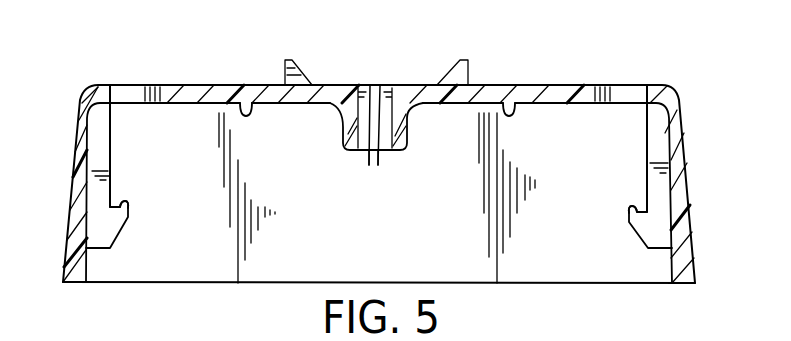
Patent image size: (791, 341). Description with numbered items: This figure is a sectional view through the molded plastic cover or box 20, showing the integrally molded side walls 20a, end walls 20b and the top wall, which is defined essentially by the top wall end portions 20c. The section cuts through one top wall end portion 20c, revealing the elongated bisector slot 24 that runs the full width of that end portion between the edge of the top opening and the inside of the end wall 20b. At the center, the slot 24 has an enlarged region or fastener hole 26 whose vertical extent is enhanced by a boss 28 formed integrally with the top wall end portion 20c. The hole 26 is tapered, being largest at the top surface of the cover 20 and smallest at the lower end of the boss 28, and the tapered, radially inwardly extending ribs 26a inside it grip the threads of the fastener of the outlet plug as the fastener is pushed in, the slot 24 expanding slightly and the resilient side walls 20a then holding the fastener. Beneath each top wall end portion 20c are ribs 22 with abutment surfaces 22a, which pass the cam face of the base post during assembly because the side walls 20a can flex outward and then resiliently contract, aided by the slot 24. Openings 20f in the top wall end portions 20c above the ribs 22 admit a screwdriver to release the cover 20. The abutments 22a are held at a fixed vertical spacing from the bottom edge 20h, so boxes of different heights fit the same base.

The cover 20 is at (576, 67).
The side walls 20a is at (74, 152).
The end walls 20b is at (227, 247).
The top wall end portions 20c is at (247, 84).
The openings 20f is at (113, 98).
The bottom edge 20h is at (553, 285).
The ribs 22 is at (125, 240).
The abutment surfaces 22a is at (131, 204).
The bisector slot 24 is at (367, 100).
The enlarged region 26 is at (360, 97).
The tapered ribs 26a is at (372, 152).
The boss 28 is at (408, 128).